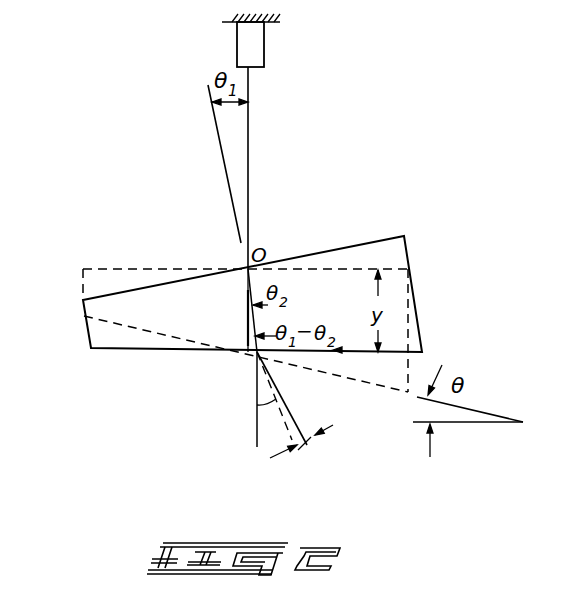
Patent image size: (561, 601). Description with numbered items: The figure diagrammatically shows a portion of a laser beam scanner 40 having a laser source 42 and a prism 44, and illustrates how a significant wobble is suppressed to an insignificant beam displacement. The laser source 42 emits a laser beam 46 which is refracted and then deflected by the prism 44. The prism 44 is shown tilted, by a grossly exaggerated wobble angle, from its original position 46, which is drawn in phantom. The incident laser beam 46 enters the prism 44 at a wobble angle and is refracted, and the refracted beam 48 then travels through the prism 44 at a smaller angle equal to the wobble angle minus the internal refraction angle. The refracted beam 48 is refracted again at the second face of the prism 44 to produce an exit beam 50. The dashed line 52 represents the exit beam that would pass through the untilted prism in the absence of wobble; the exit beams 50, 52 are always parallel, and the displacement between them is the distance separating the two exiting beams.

The laser beam scanner 40 is at (136, 107).
The laser source 42 is at (257, 46).
The prism 44 is at (112, 350).
The laser beam 46 is at (250, 160).
The refracted beam 48 is at (246, 305).
The exit beam 50 is at (271, 378).
The exit beam through untilted prism 52 is at (256, 408).